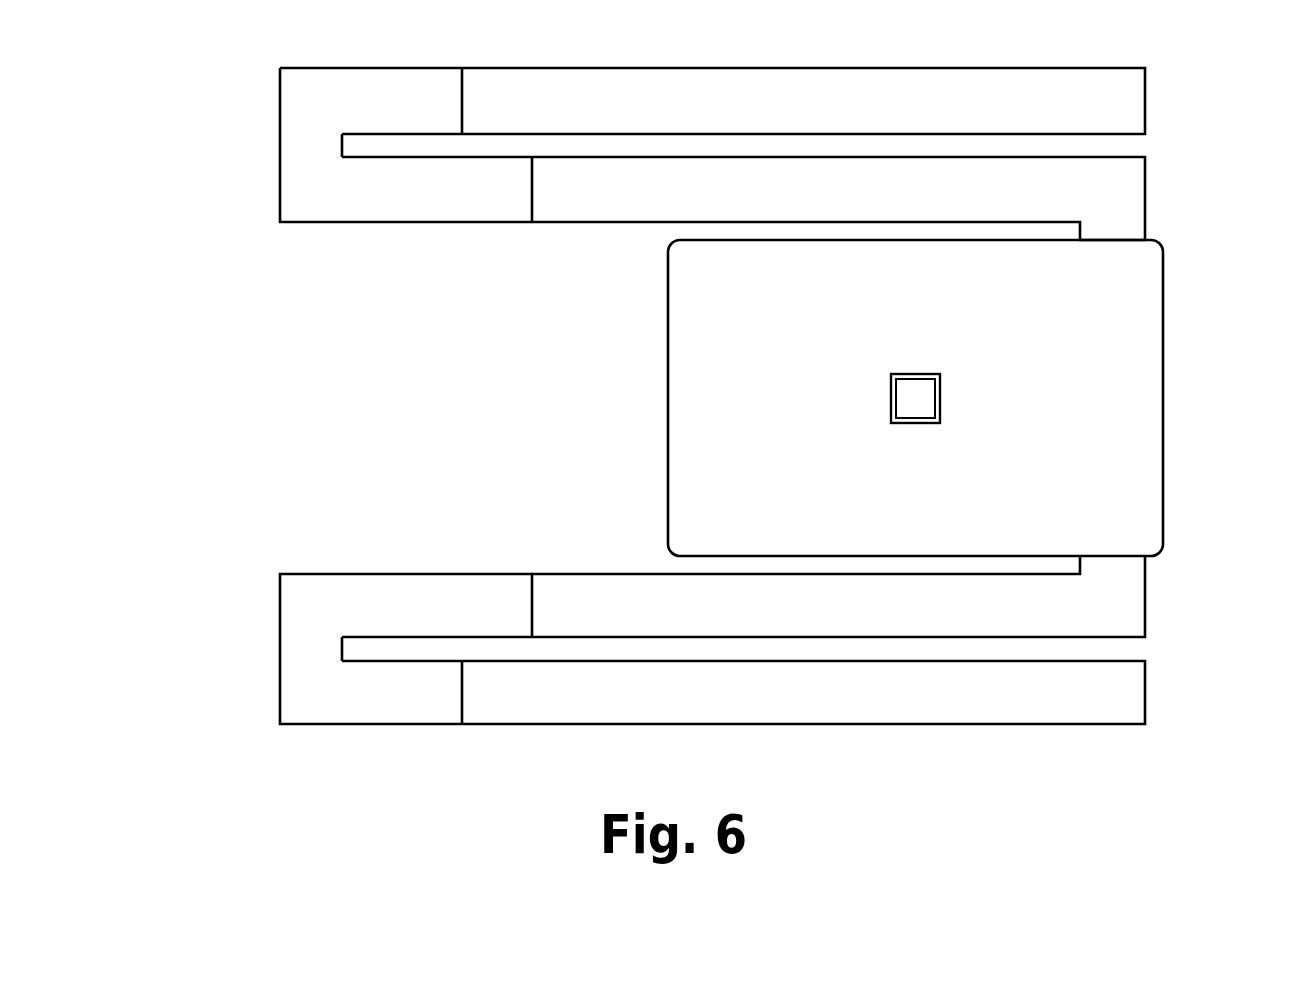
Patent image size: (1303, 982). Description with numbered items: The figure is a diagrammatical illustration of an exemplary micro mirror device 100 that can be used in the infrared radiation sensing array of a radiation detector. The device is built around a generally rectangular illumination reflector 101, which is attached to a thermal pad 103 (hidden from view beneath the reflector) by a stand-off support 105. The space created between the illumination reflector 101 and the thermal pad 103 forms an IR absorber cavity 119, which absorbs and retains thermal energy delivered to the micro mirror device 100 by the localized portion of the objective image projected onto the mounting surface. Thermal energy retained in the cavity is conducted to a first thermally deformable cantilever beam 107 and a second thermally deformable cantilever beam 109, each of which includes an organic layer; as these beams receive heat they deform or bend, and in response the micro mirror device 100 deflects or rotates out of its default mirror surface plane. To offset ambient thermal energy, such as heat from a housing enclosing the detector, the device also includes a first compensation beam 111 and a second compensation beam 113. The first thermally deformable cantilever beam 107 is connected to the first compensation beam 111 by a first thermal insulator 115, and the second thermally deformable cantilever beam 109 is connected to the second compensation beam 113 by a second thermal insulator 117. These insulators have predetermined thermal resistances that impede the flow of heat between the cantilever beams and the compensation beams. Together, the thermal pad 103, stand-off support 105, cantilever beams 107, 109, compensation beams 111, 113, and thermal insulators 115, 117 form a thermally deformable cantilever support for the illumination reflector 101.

The micro mirror device 100 is at (238, 410).
The illumination reflector 101 is at (1130, 368).
The thermal pad 103 is at (1165, 437).
The stand-off support 105 is at (930, 398).
The first thermally deformable cantilever beam 107 is at (1125, 611).
The second thermally deformable cantilever beam 109 is at (1125, 200).
The first compensation beam 111 is at (1133, 700).
The second compensation beam 113 is at (760, 80).
The first thermal insulator 115 is at (297, 678).
The second thermal insulator 117 is at (382, 210).
The IR absorber cavity 119 is at (665, 453).